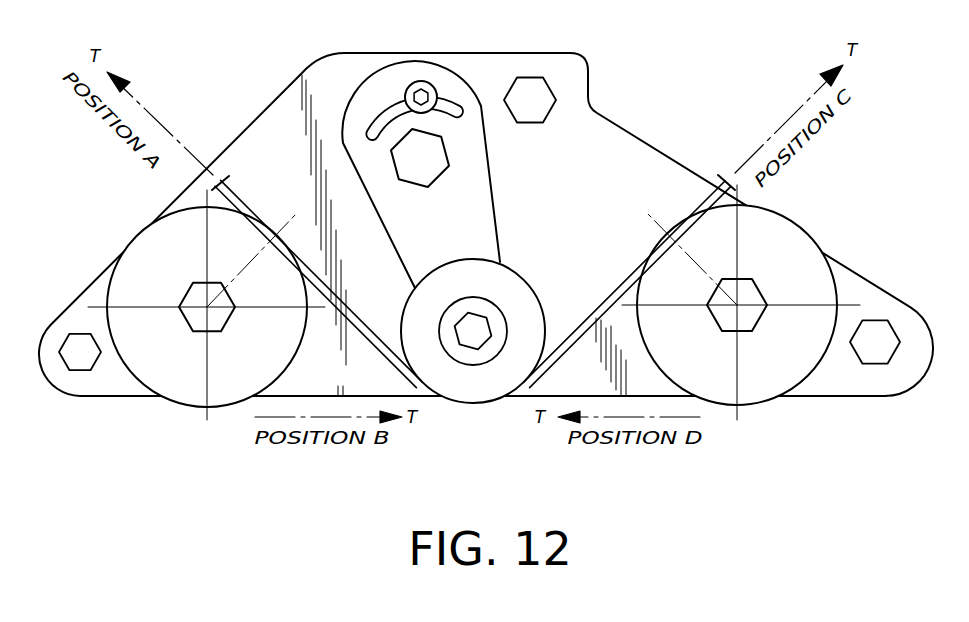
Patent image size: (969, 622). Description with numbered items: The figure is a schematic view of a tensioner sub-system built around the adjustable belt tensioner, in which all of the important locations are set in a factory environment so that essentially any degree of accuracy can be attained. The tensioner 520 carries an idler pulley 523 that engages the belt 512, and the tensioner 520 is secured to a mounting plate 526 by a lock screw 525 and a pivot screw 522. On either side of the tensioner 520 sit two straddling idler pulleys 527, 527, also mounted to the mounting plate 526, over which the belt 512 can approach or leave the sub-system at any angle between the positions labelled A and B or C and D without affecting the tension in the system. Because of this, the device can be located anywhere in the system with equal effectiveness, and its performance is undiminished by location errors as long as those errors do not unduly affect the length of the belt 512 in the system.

The belt 512 is at (372, 328).
The tensioner 520 is at (477, 212).
The pivot screw 522 is at (443, 159).
The idler pulley 523 is at (477, 404).
The lock screw 525 is at (430, 87).
The mounting plate 526 is at (632, 148).
The straddling idler pulleys 527 is at (800, 240).